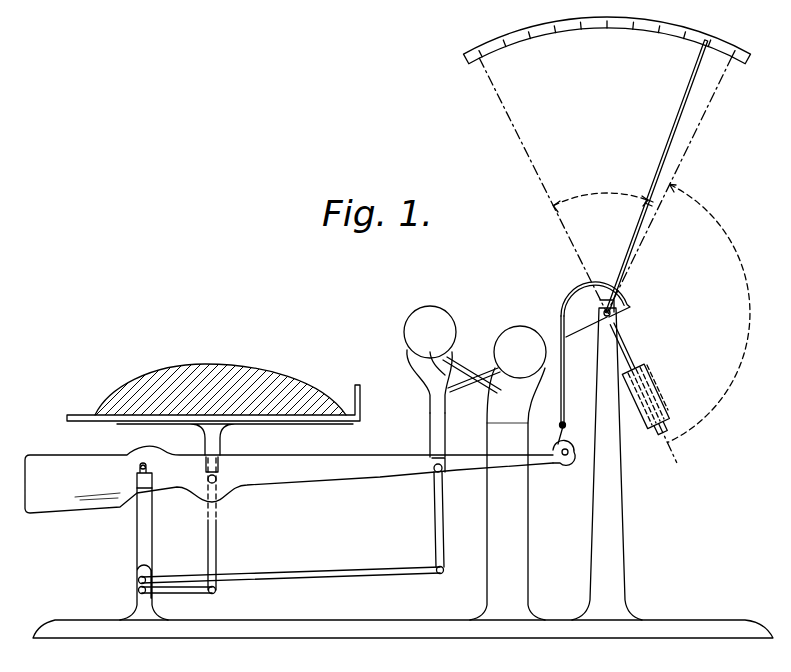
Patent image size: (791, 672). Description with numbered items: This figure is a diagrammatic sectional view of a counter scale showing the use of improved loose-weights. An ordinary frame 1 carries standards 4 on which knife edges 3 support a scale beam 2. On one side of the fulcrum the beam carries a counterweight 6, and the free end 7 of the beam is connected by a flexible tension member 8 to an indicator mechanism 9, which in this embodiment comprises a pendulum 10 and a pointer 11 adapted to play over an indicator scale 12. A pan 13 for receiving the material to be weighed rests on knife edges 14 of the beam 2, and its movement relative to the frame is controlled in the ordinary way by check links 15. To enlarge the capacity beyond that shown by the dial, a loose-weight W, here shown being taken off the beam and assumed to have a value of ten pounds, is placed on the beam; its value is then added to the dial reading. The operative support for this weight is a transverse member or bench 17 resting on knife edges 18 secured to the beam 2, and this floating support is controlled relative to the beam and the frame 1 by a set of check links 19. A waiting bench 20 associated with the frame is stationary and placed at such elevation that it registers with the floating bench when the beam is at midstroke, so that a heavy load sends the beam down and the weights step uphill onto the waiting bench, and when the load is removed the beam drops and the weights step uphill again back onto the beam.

The frame 1 is at (383, 620).
The scale beam 2 is at (372, 453).
The knife edges 3 is at (150, 465).
The standards 4 is at (139, 528).
The counterweight 6 is at (72, 497).
The free end of the beam 7 is at (553, 463).
The flexible tension member 8 is at (566, 412).
The indicator mechanism 9 is at (636, 302).
The pendulum 10 is at (656, 386).
The pointer 11 is at (639, 221).
The indicator scale 12 is at (696, 44).
The pan 13 is at (75, 415).
The knife edges 14 is at (208, 486).
The check links 15 is at (218, 556).
The bench 17 is at (430, 425).
The knife edges 18 is at (432, 471).
The check links 19 is at (441, 535).
The waiting bench 20 is at (536, 432).
The loose-weight W is at (520, 326).